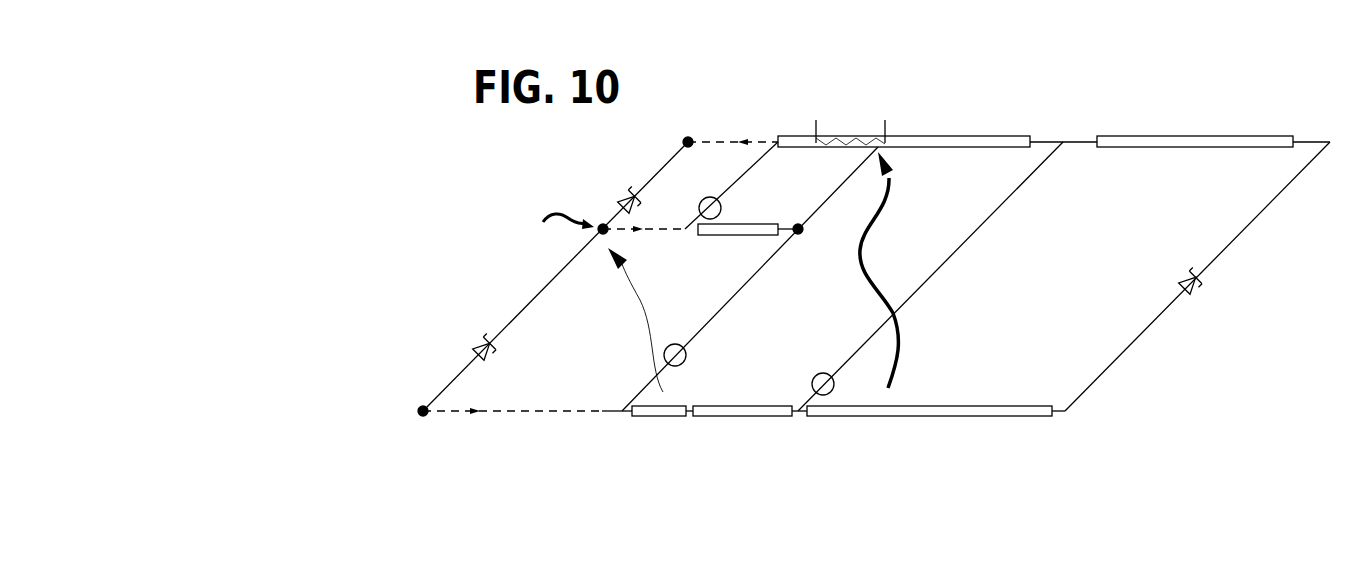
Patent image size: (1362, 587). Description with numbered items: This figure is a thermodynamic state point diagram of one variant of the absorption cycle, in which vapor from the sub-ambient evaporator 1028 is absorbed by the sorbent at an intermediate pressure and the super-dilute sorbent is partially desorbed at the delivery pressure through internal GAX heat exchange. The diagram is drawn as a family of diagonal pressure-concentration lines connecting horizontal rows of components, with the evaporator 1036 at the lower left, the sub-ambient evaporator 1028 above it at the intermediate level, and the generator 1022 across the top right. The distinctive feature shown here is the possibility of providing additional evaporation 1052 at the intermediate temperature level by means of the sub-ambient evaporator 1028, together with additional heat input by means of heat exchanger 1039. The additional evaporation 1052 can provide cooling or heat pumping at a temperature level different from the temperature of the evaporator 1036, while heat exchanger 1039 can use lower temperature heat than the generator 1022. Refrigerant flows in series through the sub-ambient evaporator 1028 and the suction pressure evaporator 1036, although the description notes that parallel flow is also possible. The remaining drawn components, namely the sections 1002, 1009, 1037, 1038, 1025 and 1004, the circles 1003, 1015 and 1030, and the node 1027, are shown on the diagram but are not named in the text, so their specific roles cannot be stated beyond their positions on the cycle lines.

The waveguide section 1002 is at (653, 417).
The phase modulator 1003 is at (673, 343).
The optical path direction 1004 is at (616, 320).
The waveguide section 1009 is at (765, 405).
The phase modulator 1015 is at (820, 372).
The generator 1022 is at (1194, 135).
The waveguide section 1025 is at (770, 223).
The port node 1027 is at (688, 136).
The sub-ambient evaporator 1028 is at (603, 222).
The phase modulator 1030 is at (711, 196).
The evaporator 1036 is at (419, 402).
The waveguide section 1037 is at (955, 405).
The waveguide section 1038 is at (941, 135).
The heat exchanger 1039 is at (858, 136).
The additional evaporation 1052 is at (551, 230).